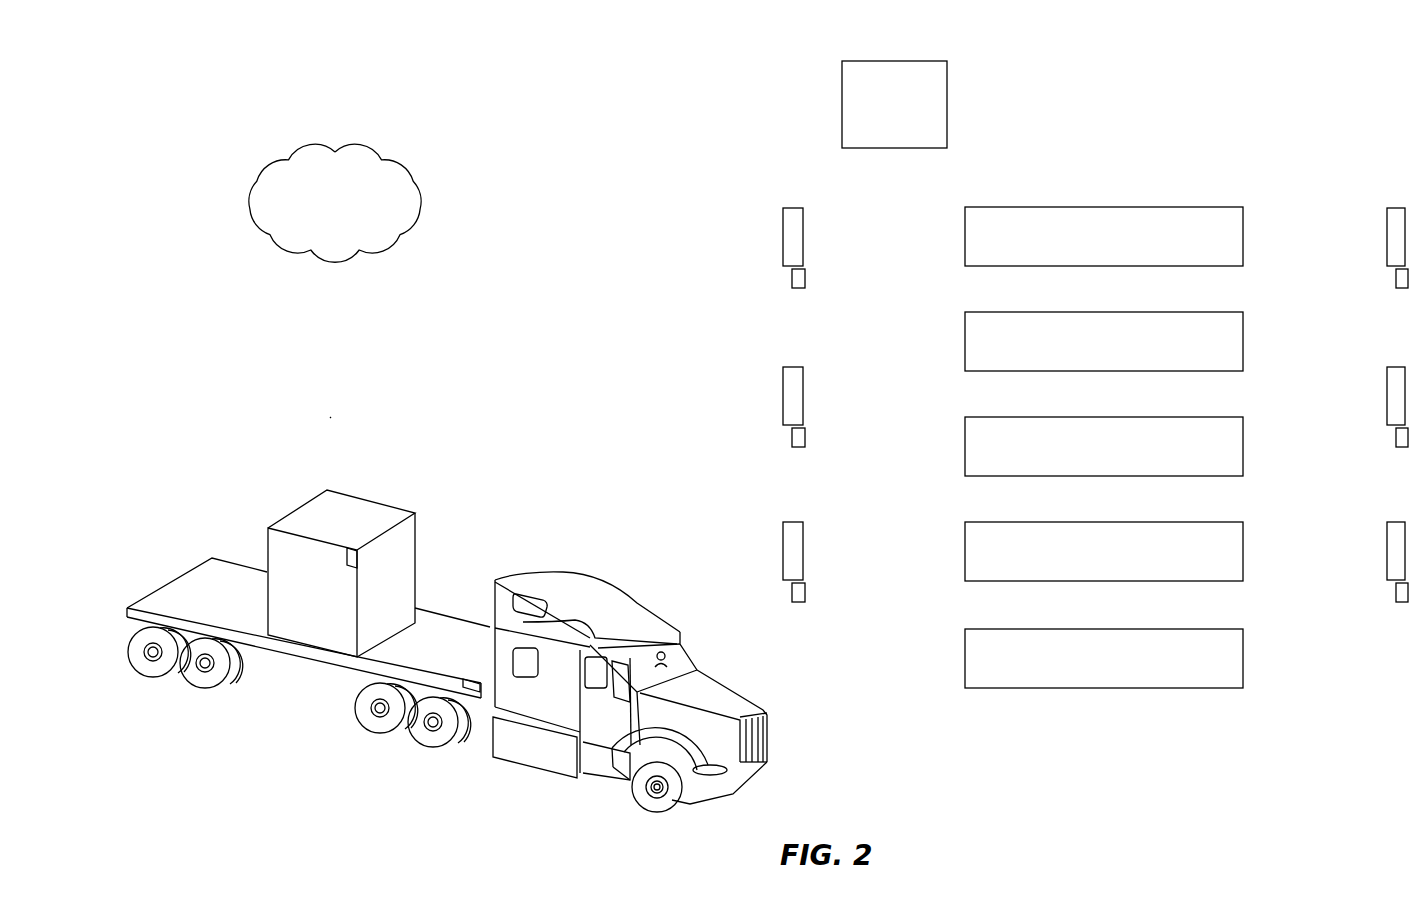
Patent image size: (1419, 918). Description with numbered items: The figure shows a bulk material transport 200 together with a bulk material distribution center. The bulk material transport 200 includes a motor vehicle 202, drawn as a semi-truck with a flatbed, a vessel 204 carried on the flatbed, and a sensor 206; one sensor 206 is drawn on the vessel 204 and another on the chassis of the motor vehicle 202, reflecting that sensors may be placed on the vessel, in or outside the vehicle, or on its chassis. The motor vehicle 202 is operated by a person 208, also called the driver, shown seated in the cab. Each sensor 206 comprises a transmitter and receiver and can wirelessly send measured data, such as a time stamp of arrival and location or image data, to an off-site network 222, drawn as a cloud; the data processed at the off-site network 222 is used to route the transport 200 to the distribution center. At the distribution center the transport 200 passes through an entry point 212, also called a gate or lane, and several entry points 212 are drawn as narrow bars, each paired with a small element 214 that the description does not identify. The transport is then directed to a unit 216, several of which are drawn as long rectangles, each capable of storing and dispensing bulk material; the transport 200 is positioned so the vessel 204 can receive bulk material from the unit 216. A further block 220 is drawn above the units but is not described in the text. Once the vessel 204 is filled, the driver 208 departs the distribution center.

The bulk material transport 200 is at (335, 422).
The motor vehicle 202 is at (475, 685).
The vessel 204 is at (313, 515).
The sensor 206 is at (480, 678).
The person (driver) 208 is at (685, 647).
The entry point 212 is at (783, 229).
The sensor device 214 is at (791, 280).
The unit 216 is at (964, 233).
The remote computing device 220 is at (842, 102).
The off-site network 222 is at (362, 216).